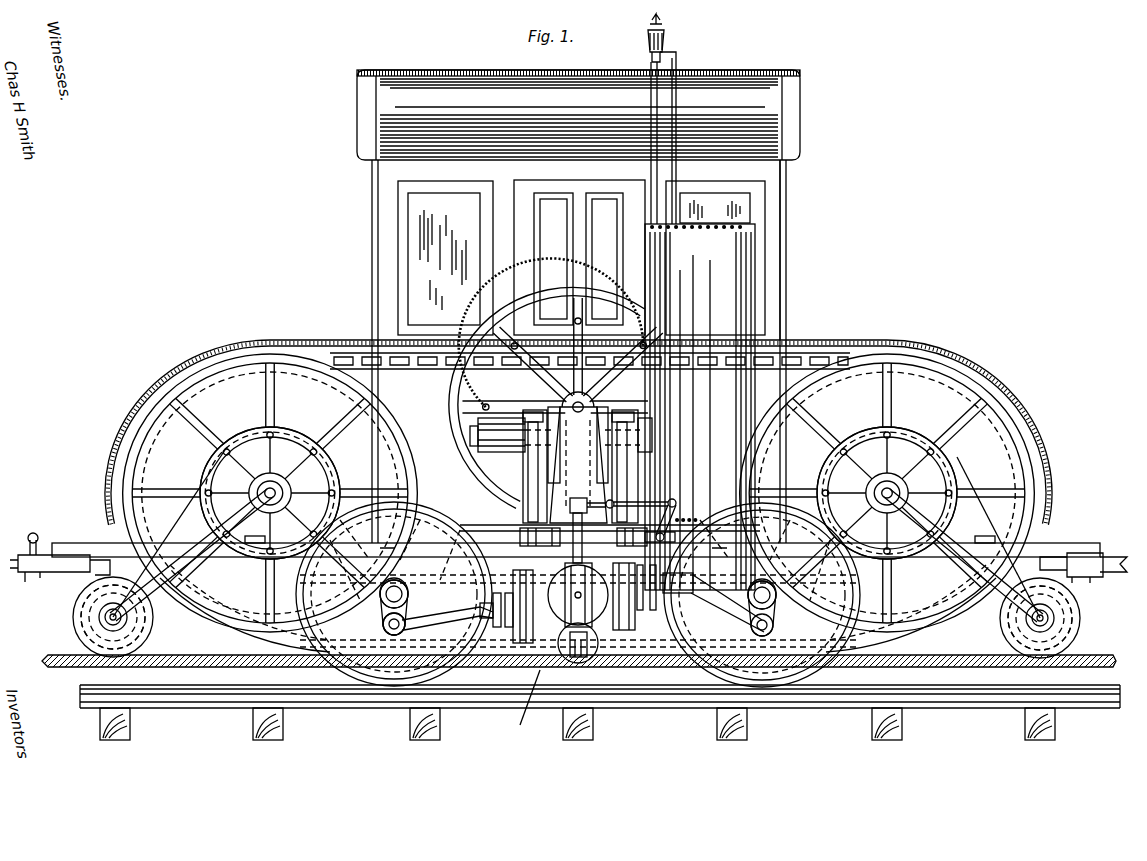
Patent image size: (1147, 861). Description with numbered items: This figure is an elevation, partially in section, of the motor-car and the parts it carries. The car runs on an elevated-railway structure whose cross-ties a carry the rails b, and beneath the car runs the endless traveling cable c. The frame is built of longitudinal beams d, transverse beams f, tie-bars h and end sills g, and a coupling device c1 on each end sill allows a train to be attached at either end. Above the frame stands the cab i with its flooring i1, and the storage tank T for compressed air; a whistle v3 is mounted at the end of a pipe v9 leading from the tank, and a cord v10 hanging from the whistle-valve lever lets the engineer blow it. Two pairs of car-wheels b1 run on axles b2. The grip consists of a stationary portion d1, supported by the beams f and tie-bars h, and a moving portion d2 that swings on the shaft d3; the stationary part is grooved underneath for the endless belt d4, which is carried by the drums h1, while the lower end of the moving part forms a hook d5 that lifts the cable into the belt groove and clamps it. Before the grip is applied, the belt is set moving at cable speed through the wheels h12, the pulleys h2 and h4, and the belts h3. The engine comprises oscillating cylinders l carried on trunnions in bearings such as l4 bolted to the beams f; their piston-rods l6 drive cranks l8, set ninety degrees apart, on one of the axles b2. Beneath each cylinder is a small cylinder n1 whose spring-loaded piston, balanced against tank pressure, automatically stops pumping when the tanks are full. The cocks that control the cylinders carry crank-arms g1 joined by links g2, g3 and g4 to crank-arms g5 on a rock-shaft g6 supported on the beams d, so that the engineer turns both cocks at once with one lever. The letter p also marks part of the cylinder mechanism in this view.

The tank T is at (700, 407).
The whistle v3 is at (668, 38).
The pipe v9 is at (650, 170).
The cord v10 is at (682, 138).
The cab i is at (787, 250).
The endless belt d4 is at (440, 372).
The moving portion of the grip d2 is at (677, 405).
The shaft d3 is at (478, 438).
The flooring i1 is at (610, 469).
The transverse beam f is at (577, 538).
The crank-arm g1 is at (573, 496).
The link g2 is at (598, 492).
The link g3 is at (641, 489).
The link g4 is at (681, 510).
The crank-arm g5 is at (695, 510).
The rock-shaft g6 is at (660, 547).
The coupling device c1 is at (568, 556).
The end sill g is at (60, 540).
The drum h1 is at (312, 383).
The pulley h4 is at (330, 470).
The belt h3 is at (170, 508).
The longitudinal beam d is at (222, 555).
The pulley h2 is at (73, 617).
The wheel h12 is at (1090, 620).
The car-wheel b1 is at (578, 594).
The axle b2 is at (578, 592).
The crank l8 is at (379, 624).
The piston-rod l6 is at (462, 612).
The cylinder l is at (574, 604).
The pump p is at (578, 570).
The bearing l4 is at (615, 596).
The cylinder n1 is at (597, 628).
The stationary portion of the grip d1 is at (580, 611).
The tie-bar h is at (553, 553).
The endless traveling cable c is at (212, 670).
The rail b is at (238, 700).
The cross-tie a is at (577, 724).
The hook d5 is at (527, 704).